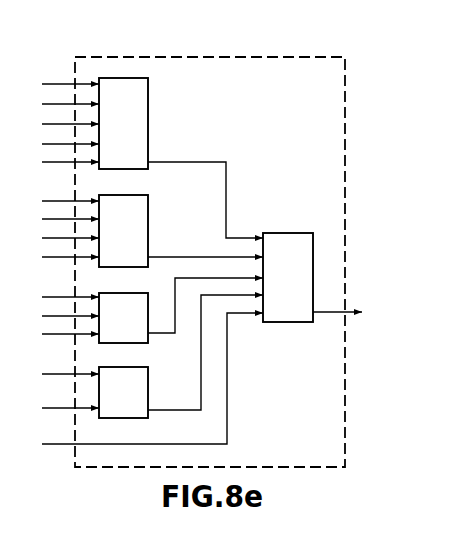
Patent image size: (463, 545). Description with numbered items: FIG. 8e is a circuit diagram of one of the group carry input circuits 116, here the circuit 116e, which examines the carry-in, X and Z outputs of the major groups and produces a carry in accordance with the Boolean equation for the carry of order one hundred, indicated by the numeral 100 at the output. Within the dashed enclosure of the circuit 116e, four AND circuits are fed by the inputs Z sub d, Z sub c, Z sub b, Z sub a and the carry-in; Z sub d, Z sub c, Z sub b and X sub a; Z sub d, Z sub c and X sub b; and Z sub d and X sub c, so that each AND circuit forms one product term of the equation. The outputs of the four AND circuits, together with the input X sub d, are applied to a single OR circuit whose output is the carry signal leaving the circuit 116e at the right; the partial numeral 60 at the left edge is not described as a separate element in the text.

The group carry input circuit 116e is at (198, 247).
The circuits 116 is at (145, 41).
The carry output signal line C100 100 is at (354, 315).
The third AND gate with inputs 60 is at (74, 318).